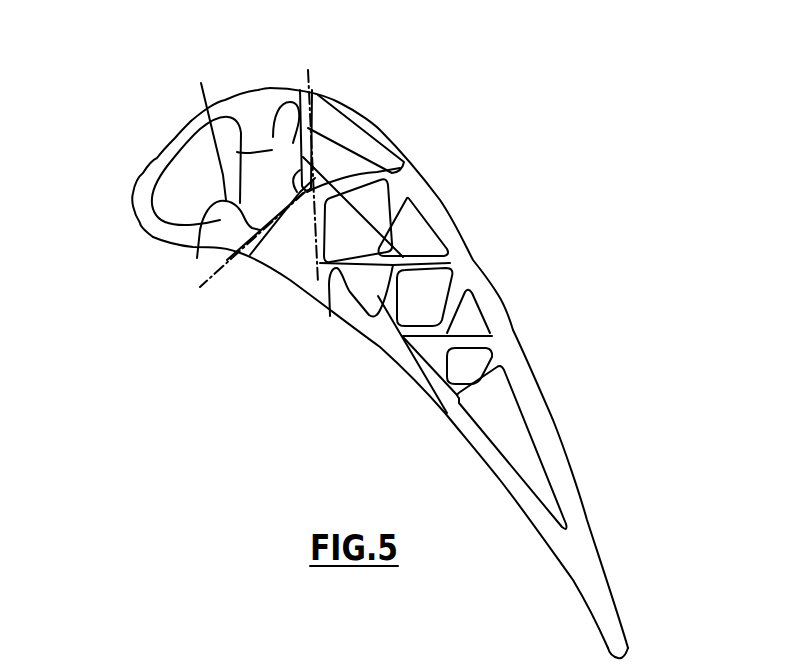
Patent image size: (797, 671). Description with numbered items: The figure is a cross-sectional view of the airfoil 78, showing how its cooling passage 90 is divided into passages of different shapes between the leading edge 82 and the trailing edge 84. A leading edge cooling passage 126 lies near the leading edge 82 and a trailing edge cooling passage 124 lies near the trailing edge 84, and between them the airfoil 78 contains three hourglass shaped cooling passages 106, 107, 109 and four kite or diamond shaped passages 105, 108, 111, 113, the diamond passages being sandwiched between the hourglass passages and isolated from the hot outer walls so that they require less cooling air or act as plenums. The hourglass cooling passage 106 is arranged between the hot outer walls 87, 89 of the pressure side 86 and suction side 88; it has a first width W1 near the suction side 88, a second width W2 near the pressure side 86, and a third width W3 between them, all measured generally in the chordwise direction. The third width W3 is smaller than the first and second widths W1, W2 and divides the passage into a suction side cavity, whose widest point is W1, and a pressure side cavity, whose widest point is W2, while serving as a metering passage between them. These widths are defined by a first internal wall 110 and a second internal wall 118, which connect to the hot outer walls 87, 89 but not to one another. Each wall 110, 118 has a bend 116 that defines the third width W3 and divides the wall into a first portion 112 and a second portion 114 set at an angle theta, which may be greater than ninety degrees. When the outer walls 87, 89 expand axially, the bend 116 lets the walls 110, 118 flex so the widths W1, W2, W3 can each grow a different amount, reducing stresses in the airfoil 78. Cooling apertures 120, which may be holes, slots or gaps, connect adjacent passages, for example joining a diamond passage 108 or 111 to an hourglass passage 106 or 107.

The airfoil 78 is at (512, 150).
The leading edge 82 is at (130, 218).
The trailing edge 84 is at (630, 652).
The pressure side 86 is at (333, 282).
The hot outer wall 87 is at (297, 272).
The suction side 88 is at (380, 128).
The hot outer wall 89 is at (337, 110).
The cooling passage 90 is at (447, 222).
The diamond shaped passage 105 is at (201, 83).
The cooling passage 106 is at (310, 190).
The hourglass shaped passage 107 is at (388, 325).
The diamond shaped passage 108 is at (392, 197).
The hourglass shaped passage 109 is at (447, 415).
The first internal wall 110 is at (270, 117).
The diamond shaped passage 111 is at (440, 290).
The first portion 112 is at (272, 150).
The diamond shaped passage 113 is at (478, 362).
The second portion 114 is at (197, 258).
The bend 116 is at (350, 127).
The second internal wall 118 is at (400, 170).
The cooling aperture 120 is at (353, 322).
The trailing edge cooling passage 124 is at (515, 425).
The leading edge cooling passage 126 is at (185, 193).
The first width W1 is at (315, 123).
The second width W2 is at (303, 251).
The third width W3 is at (331, 199).
The angle theta is at (290, 177).